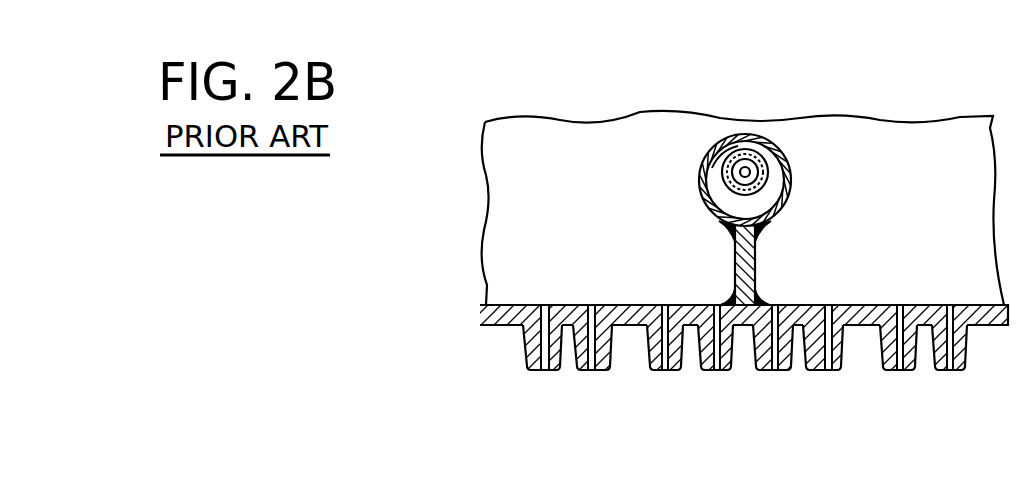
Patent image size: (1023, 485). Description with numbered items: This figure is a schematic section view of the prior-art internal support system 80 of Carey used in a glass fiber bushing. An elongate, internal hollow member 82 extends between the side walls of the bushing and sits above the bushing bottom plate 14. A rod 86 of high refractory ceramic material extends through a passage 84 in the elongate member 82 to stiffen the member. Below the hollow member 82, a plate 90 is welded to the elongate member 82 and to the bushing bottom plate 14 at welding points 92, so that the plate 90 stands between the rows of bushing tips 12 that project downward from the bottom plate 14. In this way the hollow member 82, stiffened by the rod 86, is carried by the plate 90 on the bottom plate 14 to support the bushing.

The internal support system 80 is at (867, 101).
The elongate internal hollow member 82 is at (792, 180).
The passage 84 is at (710, 172).
The rod 86 is at (752, 165).
The plate 90 is at (757, 265).
The welding point 92 is at (770, 235).
The bushing bottom plate 14 is at (632, 303).
The bushing tip 12 is at (870, 362).